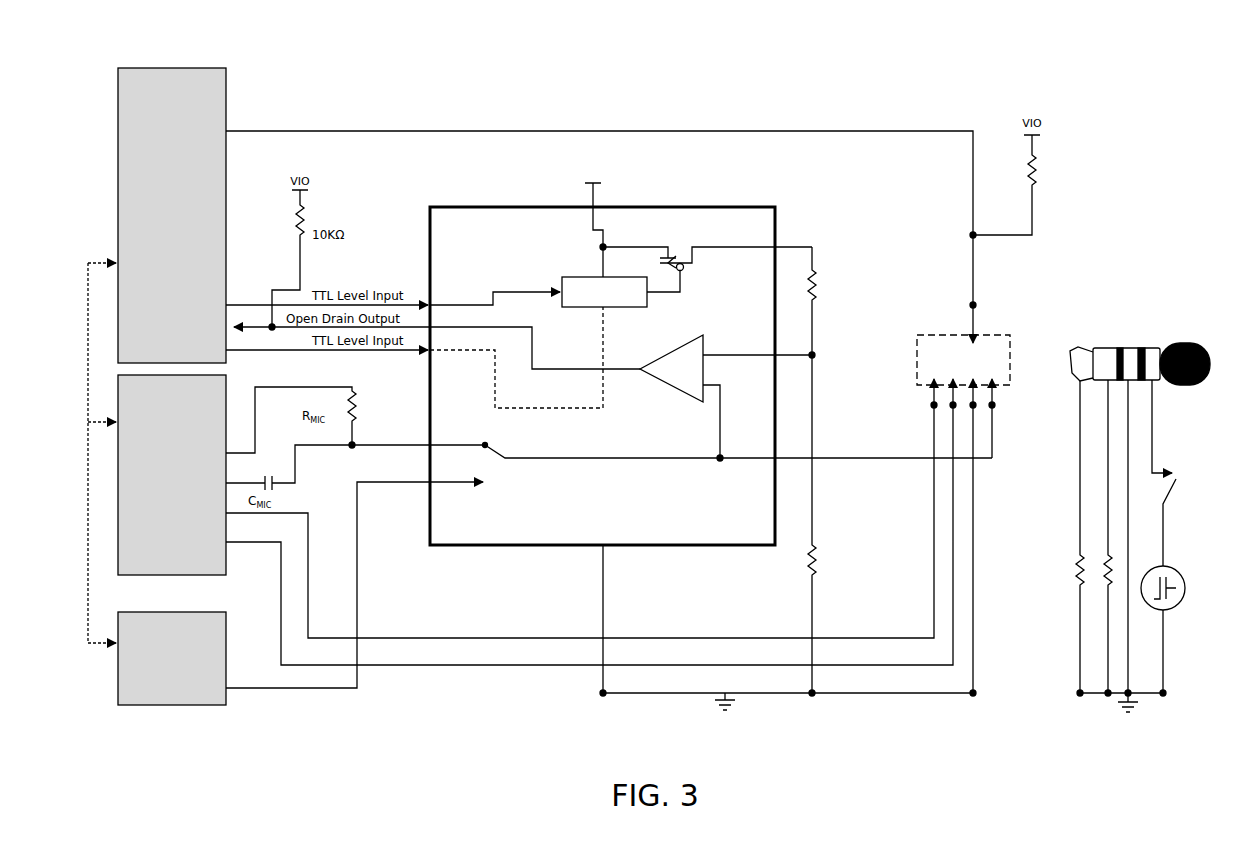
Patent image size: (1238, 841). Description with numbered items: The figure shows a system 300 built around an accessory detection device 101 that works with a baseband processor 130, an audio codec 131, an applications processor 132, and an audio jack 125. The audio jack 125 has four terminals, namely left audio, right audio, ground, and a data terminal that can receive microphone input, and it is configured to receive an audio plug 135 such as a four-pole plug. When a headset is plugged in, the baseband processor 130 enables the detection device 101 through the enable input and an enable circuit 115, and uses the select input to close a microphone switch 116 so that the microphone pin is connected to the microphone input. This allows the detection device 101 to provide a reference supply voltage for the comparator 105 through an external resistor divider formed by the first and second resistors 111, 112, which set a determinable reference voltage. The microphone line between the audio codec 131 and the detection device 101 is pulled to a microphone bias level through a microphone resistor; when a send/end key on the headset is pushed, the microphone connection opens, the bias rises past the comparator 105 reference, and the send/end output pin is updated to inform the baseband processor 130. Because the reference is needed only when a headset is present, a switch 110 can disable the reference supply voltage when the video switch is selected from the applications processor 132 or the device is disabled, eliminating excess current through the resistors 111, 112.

The system 300 is at (1143, 137).
The baseband processor 130 is at (228, 84).
The audio codec 131 is at (228, 558).
The applications processor 132 is at (228, 690).
The accessory detection device 101 is at (778, 220).
The enable circuit 115 is at (581, 277).
The switch 110 is at (688, 264).
The comparator 105 is at (672, 358).
The microphone switch 116 is at (492, 458).
The first resistor 111 is at (818, 284).
The second resistor 112 is at (818, 560).
The audio jack 125 is at (925, 384).
The audio plug 135 is at (1195, 358).